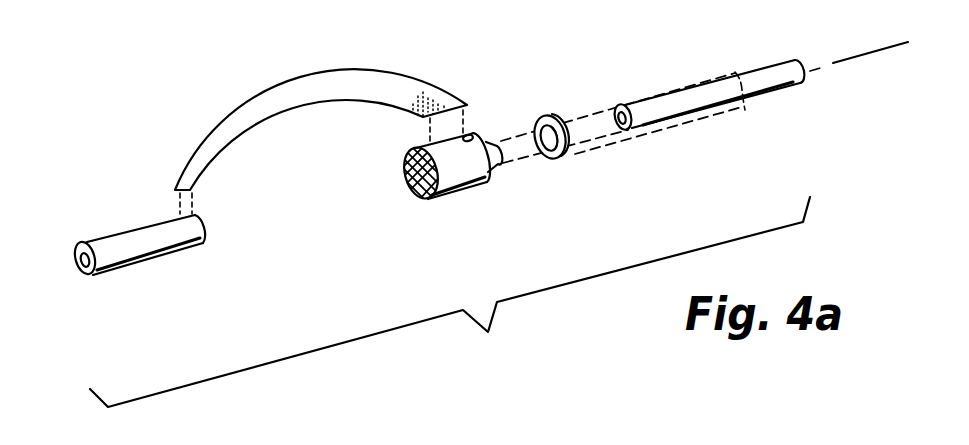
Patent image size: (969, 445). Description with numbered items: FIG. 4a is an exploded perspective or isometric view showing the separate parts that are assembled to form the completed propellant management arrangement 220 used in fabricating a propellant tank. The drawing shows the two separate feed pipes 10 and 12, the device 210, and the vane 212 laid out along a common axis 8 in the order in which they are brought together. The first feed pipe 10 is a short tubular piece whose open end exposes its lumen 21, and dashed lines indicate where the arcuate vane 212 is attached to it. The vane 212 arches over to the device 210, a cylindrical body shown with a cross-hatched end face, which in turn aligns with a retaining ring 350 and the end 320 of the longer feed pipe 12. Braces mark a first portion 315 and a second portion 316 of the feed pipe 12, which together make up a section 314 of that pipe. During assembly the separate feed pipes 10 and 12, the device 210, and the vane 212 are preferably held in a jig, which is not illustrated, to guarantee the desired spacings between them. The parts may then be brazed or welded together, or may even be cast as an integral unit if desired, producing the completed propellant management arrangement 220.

The instrument assembly axis 8 is at (875, 50).
The feed pipe 10 is at (158, 262).
The feed pipe 12 is at (770, 64).
The sheath lumen 21 is at (85, 275).
The device 210 is at (454, 194).
The vane 212 is at (312, 108).
The propellant management arrangement 220 is at (488, 332).
The rod section 314 is at (768, 173).
The proximal rod portion 315 is at (707, 132).
The distal rod portion 316 is at (763, 119).
The rod end 320 is at (620, 104).
The retaining ring 350 is at (565, 156).